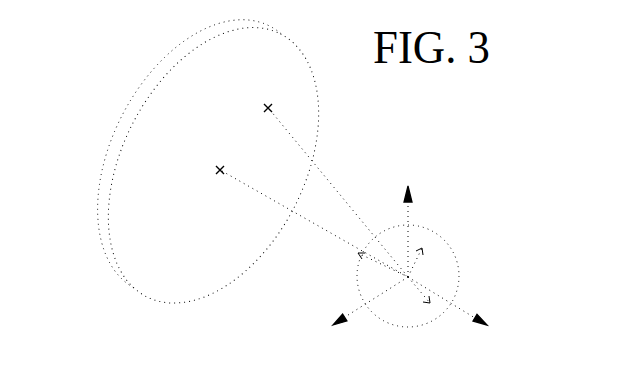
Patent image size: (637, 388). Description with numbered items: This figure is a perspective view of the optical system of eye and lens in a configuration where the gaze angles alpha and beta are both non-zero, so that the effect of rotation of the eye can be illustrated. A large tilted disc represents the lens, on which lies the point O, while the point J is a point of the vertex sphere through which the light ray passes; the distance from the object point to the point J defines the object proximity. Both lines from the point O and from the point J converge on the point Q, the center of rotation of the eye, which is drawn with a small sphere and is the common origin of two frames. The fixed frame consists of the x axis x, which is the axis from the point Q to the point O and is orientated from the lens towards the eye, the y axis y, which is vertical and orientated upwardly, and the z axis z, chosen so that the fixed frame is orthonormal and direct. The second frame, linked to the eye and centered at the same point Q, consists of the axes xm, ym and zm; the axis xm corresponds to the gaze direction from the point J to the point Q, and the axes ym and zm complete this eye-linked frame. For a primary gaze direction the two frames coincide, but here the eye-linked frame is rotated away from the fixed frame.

The point O is at (207, 162).
The point J of the vertex sphere J is at (261, 108).
The point Q' Q is at (408, 276).
The x axis x is at (456, 301).
The y axis y is at (418, 222).
The z axis z is at (370, 314).
The x_m axis xm is at (414, 299).
The y_m axis ym is at (429, 257).
The z_m axis zm is at (383, 269).